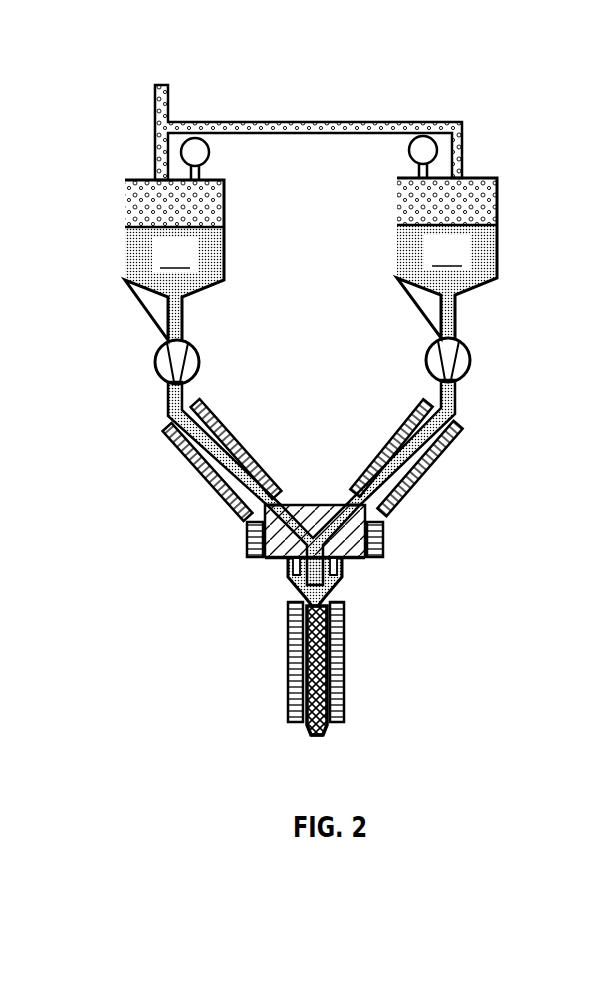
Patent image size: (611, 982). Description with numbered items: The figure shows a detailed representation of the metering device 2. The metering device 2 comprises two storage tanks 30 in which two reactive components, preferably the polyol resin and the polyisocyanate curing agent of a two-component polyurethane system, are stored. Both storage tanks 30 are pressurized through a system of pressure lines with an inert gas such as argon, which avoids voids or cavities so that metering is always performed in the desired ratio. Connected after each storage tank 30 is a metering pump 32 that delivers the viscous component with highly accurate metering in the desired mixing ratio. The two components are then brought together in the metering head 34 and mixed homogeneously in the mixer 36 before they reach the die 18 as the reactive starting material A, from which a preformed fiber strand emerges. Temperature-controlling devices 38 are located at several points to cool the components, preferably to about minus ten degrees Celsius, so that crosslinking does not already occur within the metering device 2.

The metering device 2 is at (539, 160).
The storage tank 30 is at (148, 266).
The metering pump 32 is at (151, 368).
The metering head 34 is at (352, 548).
The mixer 36 is at (318, 675).
The temperature-controlling device 38 is at (250, 543).
The die 18 is at (325, 731).
The reactive starting material A is at (333, 588).